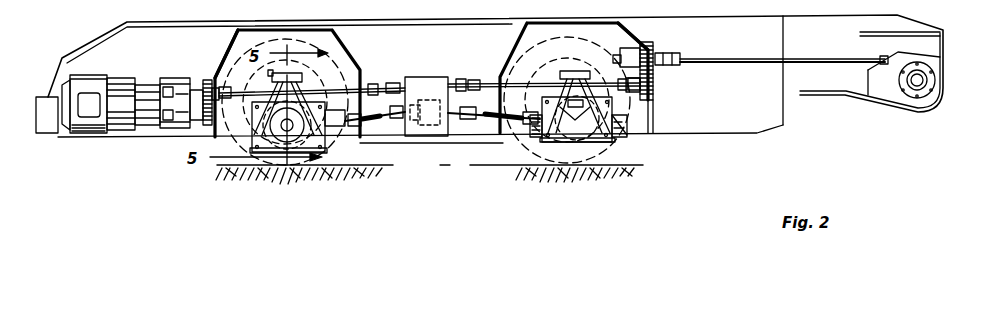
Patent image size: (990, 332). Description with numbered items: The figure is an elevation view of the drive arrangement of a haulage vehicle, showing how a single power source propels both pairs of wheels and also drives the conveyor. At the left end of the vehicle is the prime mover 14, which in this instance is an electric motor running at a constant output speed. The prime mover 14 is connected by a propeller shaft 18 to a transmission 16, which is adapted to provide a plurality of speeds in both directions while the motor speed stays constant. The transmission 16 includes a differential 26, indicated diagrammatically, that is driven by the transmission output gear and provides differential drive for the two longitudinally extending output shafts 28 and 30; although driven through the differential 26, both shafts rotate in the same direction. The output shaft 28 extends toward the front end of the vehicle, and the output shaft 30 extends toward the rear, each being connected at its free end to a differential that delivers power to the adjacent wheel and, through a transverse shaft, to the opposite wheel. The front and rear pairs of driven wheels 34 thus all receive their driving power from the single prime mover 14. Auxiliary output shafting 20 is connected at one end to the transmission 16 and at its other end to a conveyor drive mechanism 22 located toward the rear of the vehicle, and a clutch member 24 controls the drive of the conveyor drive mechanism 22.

The prime mover 14 is at (119, 76).
The transmission 16 is at (418, 78).
The propeller shaft 18 is at (333, 83).
The auxiliary output shafting 20 is at (510, 95).
The conveyor drive mechanism 22 is at (940, 62).
The clutch member 24 is at (652, 46).
The differential 26 is at (438, 156).
The output shaft 28 is at (505, 120).
The output shaft 30 is at (370, 124).
The driven wheels 34 is at (240, 52).